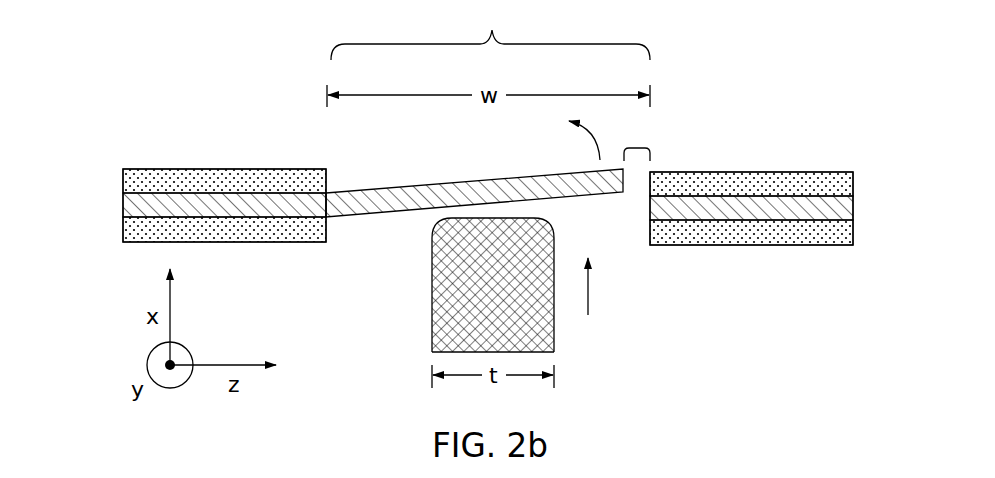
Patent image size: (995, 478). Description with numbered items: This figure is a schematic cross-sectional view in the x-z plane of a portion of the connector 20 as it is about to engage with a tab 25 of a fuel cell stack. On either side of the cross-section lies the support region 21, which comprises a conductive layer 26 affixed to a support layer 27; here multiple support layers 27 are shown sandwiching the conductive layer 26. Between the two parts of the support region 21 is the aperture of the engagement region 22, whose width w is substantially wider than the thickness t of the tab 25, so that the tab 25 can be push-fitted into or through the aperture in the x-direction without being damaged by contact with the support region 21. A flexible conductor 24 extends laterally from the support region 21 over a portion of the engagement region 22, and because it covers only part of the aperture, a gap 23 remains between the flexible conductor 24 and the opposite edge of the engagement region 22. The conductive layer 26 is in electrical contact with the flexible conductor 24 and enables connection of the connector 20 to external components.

The connector 20 is at (717, 317).
The support region 21 is at (245, 155).
The engagement region 22 is at (490, 80).
The gap 23 is at (637, 147).
The flexible conductor 24 is at (355, 192).
The tab 25 is at (554, 292).
The conductive layer 26 is at (203, 197).
The support layer 27 is at (145, 228).